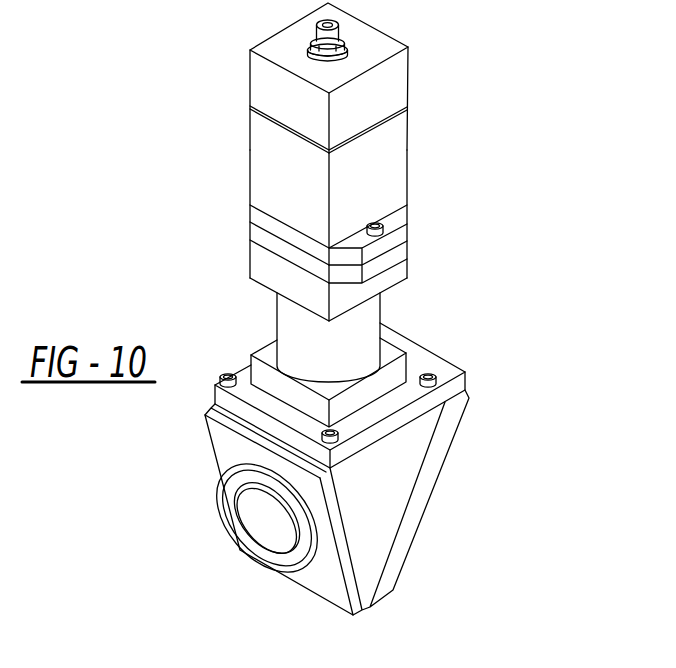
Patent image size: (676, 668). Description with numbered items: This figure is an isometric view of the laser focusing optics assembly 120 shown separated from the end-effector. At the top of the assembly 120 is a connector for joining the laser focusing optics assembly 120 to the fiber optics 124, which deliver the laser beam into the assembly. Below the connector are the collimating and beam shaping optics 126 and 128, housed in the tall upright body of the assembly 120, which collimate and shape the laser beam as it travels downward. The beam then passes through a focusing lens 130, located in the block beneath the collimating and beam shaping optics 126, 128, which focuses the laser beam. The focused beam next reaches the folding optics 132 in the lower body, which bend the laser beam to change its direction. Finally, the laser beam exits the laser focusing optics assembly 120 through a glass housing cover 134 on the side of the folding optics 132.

The laser focusing optics assembly 120 is at (463, 33).
The fiber optics 124 is at (316, 32).
The collimating and beam shaping optics 126 is at (388, 78).
The collimating and beam shaping optics 128 is at (388, 183).
The focusing lens 130 is at (395, 372).
The folding optics 132 is at (402, 466).
The glass housing cover 134 is at (228, 514).